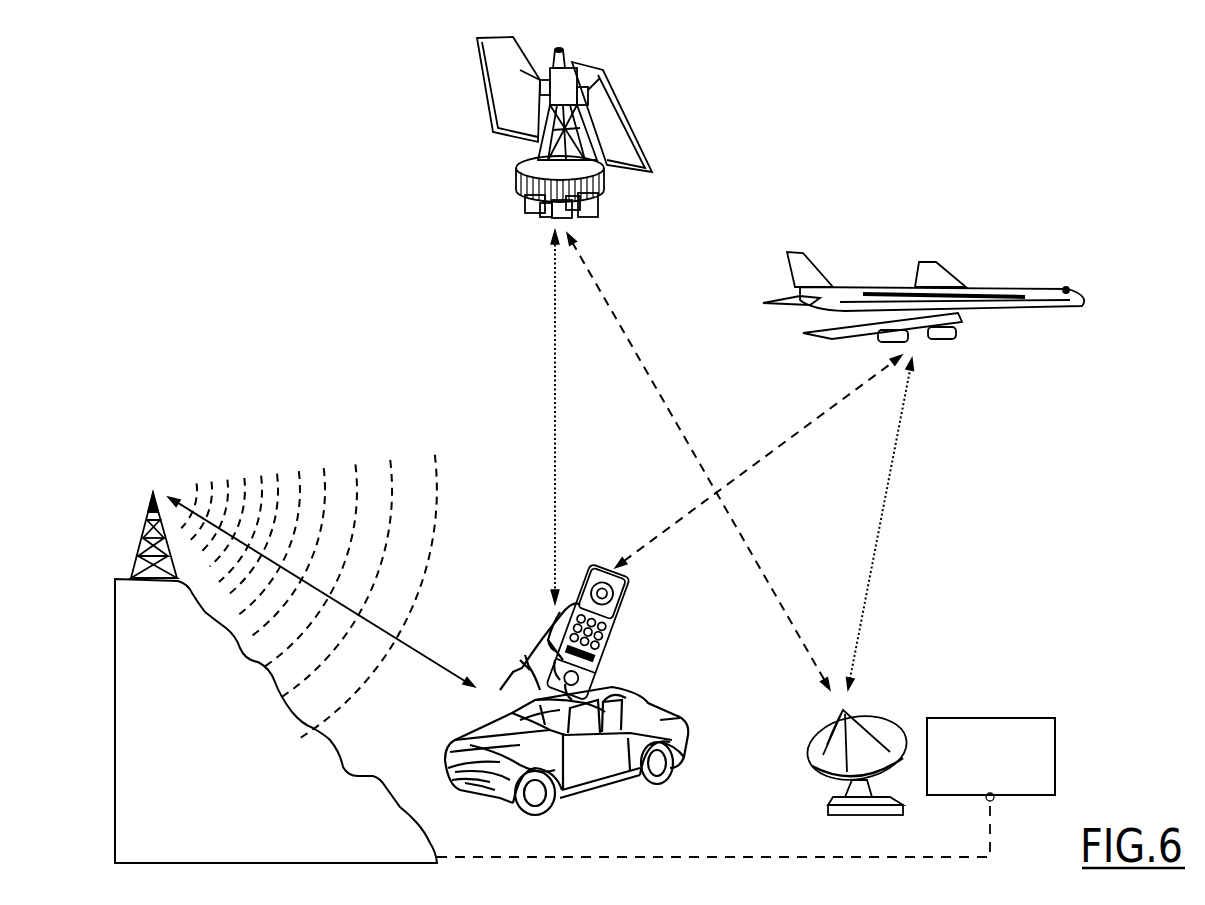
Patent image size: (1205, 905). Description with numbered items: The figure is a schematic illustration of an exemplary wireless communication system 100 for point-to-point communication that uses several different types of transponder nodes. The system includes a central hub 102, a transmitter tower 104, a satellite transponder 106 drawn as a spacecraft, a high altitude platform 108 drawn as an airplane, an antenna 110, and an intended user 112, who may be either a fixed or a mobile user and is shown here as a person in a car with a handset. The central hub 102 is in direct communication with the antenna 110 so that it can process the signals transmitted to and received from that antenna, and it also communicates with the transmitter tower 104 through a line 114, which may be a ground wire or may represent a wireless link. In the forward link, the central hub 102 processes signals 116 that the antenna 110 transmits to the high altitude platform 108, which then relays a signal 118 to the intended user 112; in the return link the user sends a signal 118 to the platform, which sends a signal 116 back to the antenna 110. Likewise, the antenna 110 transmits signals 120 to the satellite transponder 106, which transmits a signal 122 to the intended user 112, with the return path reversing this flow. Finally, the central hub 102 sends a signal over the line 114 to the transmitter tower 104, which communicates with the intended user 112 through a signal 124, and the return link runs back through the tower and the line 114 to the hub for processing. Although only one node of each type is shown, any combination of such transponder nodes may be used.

The wireless communication system 100 is at (850, 87).
The central hub 102 is at (1030, 718).
The transmitter tower 104 is at (142, 517).
The satellite transponder 106 is at (575, 57).
The high altitude platform 108 is at (886, 288).
The antenna 110 is at (822, 738).
The intended user 112 is at (628, 610).
The line 114 is at (730, 856).
The signal 116 is at (890, 470).
The signal 118 is at (826, 412).
The signal 120 is at (625, 352).
The signal 122 is at (555, 357).
The signal 124 is at (408, 614).